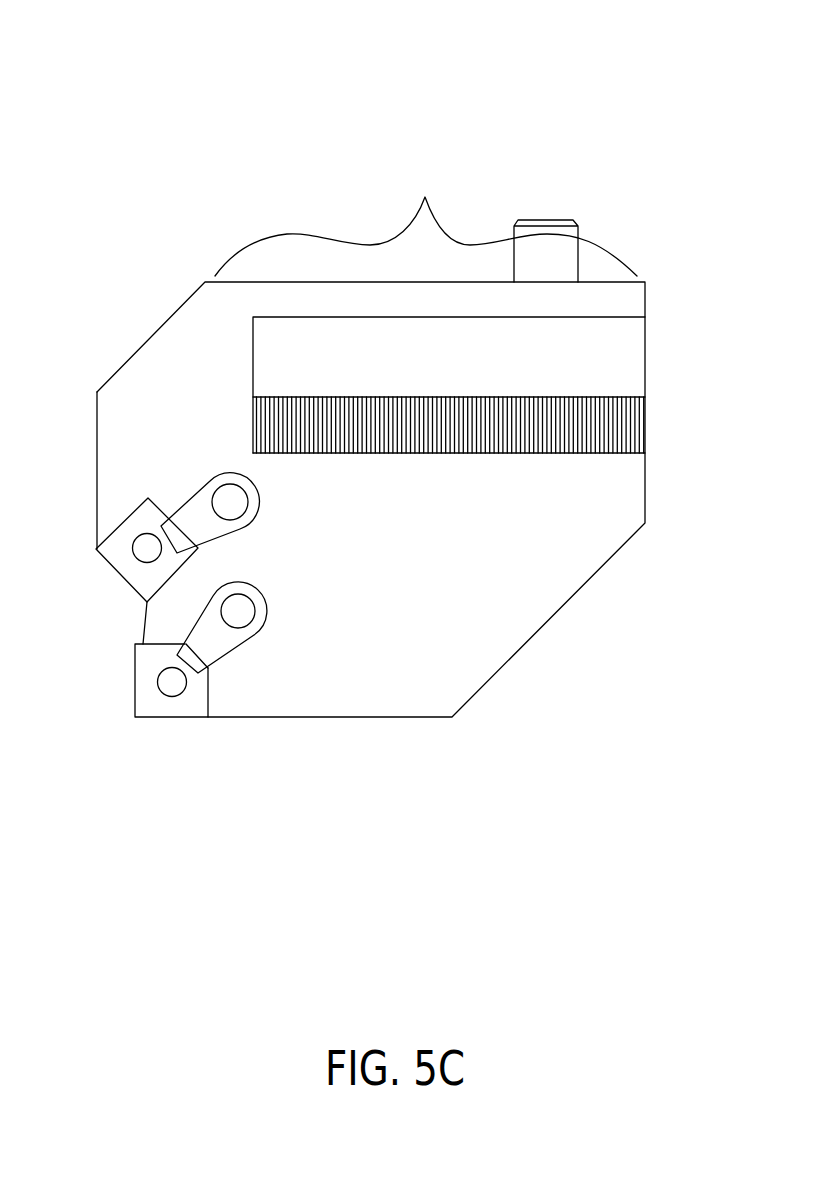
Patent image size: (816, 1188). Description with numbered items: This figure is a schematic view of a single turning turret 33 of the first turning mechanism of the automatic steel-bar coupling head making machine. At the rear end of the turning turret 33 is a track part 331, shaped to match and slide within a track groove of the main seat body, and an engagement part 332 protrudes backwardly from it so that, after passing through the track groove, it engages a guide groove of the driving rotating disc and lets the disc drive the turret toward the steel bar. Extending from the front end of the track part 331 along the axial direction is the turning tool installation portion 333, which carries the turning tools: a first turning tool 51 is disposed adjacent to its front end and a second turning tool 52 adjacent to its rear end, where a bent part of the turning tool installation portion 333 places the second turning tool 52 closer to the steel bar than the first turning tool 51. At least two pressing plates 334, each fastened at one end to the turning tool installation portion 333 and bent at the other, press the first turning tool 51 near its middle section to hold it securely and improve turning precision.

The turning turret 33 is at (696, 63).
The track part 331 is at (426, 222).
The engagement part 332 is at (522, 233).
The turning tool installation portion 333 is at (113, 459).
The pressing plate 334 is at (265, 603).
The first turning tool 51 is at (177, 707).
The second turning tool 52 is at (129, 567).